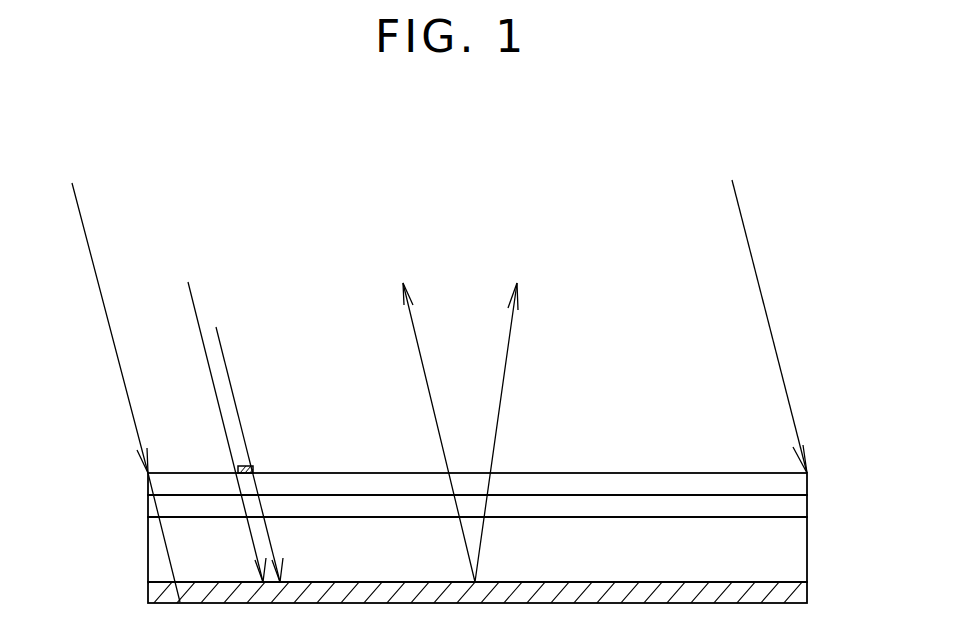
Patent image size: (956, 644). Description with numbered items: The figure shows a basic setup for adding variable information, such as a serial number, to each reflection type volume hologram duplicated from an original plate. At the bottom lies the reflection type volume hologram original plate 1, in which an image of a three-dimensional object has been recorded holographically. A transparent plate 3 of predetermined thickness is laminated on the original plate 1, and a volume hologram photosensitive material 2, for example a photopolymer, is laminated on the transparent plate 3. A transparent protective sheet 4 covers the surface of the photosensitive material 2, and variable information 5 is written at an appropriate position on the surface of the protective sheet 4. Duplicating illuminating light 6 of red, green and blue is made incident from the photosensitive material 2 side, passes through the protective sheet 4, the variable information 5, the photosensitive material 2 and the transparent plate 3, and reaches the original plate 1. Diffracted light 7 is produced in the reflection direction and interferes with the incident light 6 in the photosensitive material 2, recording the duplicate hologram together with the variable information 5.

The reflection type volume hologram original plate 1 is at (800, 594).
The volume hologram photosensitive material 2 is at (800, 507).
The transparent plate 3 is at (800, 547).
The transparent protective sheet 4 is at (800, 482).
The variable information 5 is at (248, 460).
The duplicating illuminating light 6 is at (117, 347).
The diffracted light 7 is at (527, 373).